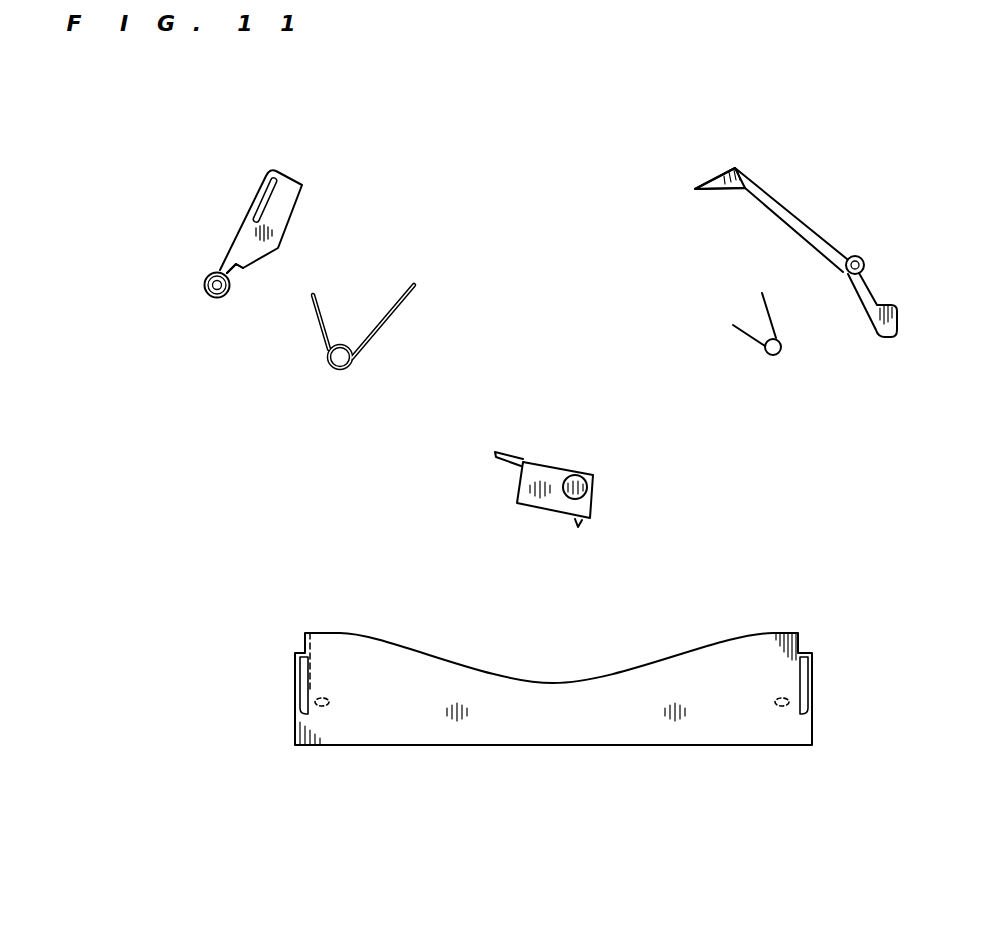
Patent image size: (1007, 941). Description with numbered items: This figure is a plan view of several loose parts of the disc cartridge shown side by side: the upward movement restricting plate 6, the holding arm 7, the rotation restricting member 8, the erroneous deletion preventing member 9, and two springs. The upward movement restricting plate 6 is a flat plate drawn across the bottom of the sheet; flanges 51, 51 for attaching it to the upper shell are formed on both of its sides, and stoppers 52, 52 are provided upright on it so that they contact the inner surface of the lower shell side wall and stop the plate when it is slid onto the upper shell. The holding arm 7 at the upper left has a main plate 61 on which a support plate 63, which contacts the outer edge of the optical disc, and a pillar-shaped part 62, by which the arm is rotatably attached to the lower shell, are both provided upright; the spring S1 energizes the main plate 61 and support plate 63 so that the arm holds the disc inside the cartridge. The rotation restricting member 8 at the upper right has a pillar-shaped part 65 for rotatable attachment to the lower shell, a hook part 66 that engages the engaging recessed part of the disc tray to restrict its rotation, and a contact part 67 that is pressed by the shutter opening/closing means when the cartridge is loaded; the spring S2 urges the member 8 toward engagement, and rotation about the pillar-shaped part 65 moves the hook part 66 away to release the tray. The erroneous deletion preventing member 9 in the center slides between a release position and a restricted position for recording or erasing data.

The holding arm 7 is at (287, 210).
The support plate 63 is at (282, 172).
The pillar-shaped part 62 is at (205, 287).
The main plate 61 is at (255, 250).
The spring S1 is at (373, 333).
The rotation restricting member 8 is at (790, 215).
The hook part 66 is at (718, 186).
The pillar-shaped part 65 is at (865, 263).
The contact part 67 is at (898, 320).
The spring S2 is at (745, 331).
The erroneous deletion preventing member 9 is at (552, 470).
The upward movement restricting plate 6 is at (545, 690).
The flange 51 is at (297, 700).
The stopper 52 is at (322, 707).